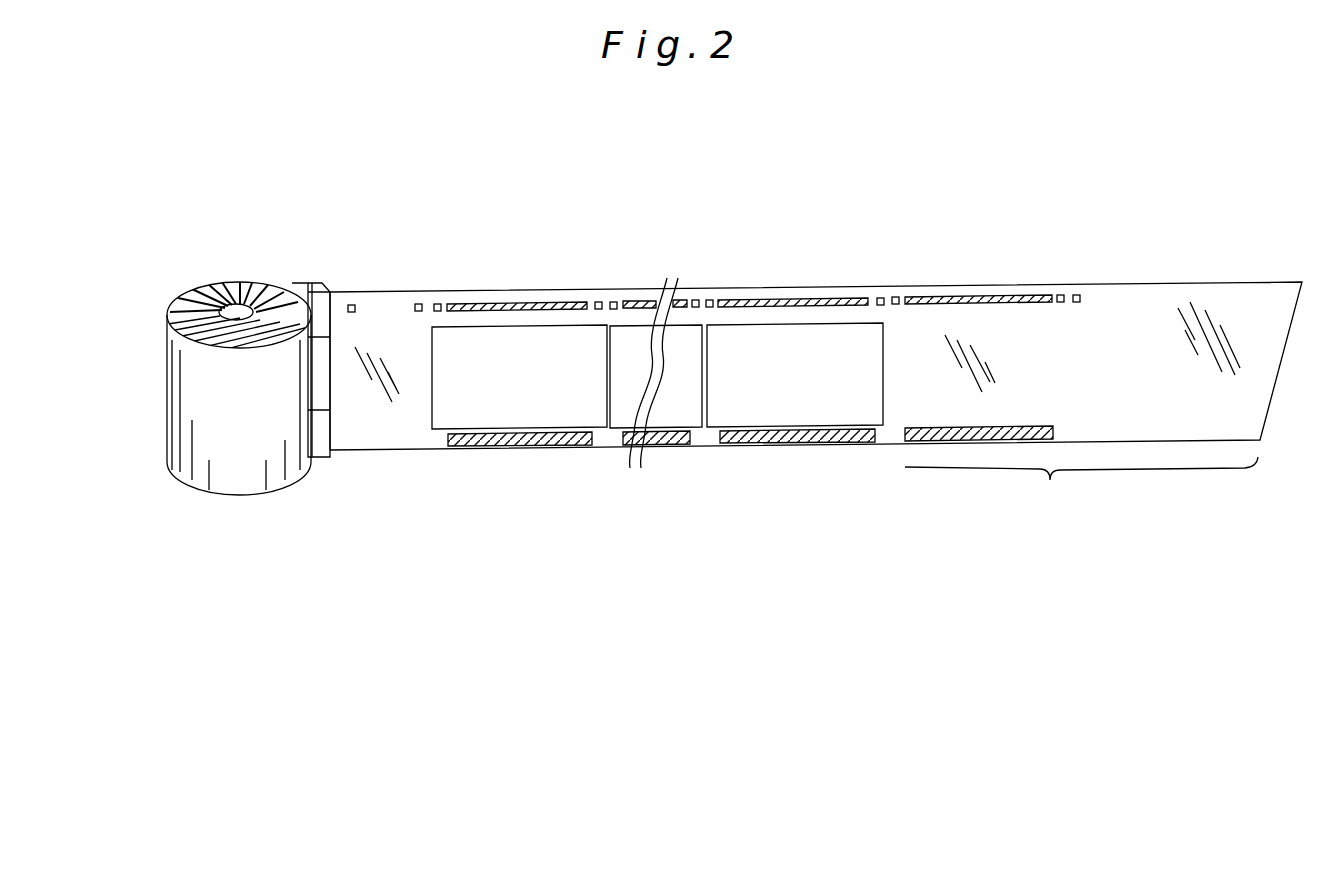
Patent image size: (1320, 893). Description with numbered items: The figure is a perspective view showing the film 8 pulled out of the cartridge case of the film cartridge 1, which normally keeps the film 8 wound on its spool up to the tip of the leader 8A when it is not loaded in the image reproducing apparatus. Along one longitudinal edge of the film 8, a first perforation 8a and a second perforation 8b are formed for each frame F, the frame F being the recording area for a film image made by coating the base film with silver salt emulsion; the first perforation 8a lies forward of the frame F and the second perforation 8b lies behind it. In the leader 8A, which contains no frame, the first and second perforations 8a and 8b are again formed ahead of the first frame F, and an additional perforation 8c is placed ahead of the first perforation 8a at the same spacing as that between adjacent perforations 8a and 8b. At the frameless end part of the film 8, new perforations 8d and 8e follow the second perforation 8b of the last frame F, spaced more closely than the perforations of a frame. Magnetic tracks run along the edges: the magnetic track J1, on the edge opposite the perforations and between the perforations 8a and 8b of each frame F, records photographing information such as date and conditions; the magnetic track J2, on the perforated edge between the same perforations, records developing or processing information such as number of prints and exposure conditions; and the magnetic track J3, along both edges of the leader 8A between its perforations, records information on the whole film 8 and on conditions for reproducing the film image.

The film cartridge 1 is at (248, 451).
The film 8 is at (1177, 277).
The leader 8A is at (1081, 491).
The first perforation 8a is at (598, 301).
The second perforation 8b is at (438, 303).
The additional perforation 8c is at (1077, 294).
The new perforation 8d is at (418, 303).
The new perforation 8e is at (351, 304).
The magnetic track J1 is at (517, 437).
The magnetic track J2 is at (507, 303).
The magnetic track J3 is at (975, 297).
The frame F is at (445, 418).